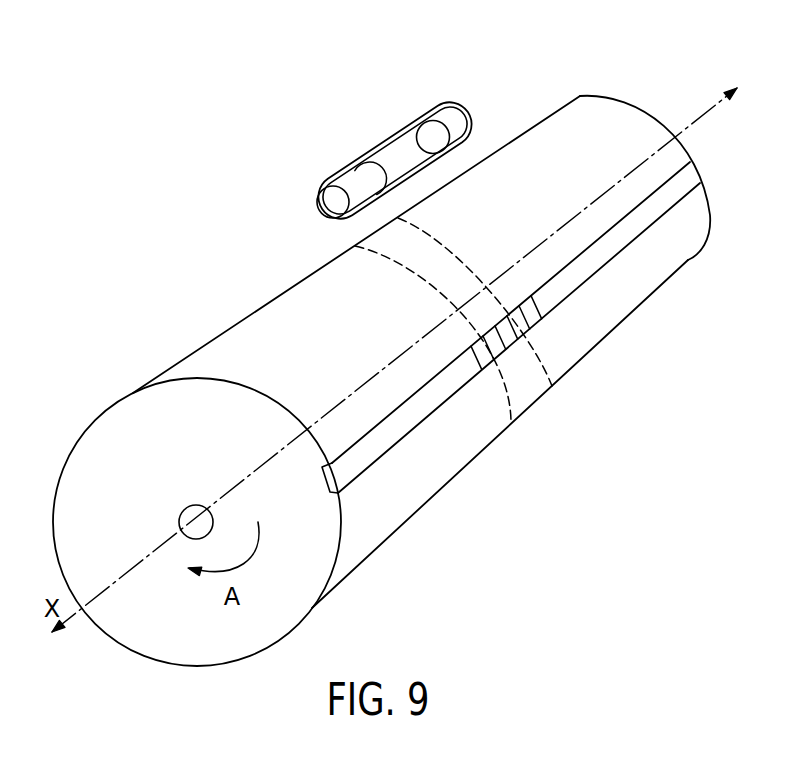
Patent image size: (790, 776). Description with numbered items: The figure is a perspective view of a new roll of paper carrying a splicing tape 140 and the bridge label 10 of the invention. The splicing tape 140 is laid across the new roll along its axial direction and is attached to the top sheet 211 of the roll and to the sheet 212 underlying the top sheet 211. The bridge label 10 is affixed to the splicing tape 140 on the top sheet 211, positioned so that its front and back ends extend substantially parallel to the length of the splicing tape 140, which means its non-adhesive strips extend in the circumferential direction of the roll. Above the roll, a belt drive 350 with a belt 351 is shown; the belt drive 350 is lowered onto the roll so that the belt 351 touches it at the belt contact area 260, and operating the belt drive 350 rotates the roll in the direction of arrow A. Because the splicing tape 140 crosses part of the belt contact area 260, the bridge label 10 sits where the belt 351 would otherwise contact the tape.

The bridge label 10 is at (512, 326).
The splicing tape 140 is at (687, 182).
The top sheet 211 is at (618, 122).
The sheet underlying the top sheet 212 is at (672, 257).
The belt contact area 260 is at (415, 277).
The belt drive 350 is at (428, 100).
The belt 351 is at (378, 147).